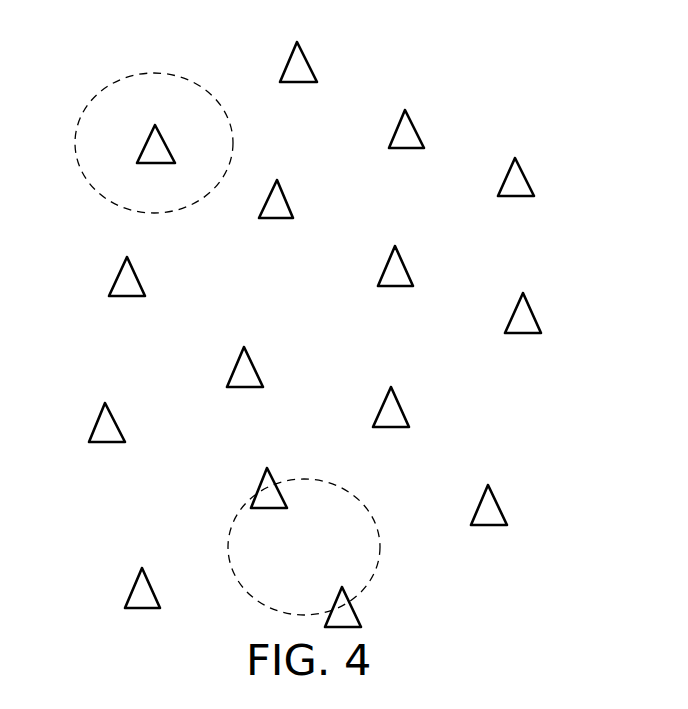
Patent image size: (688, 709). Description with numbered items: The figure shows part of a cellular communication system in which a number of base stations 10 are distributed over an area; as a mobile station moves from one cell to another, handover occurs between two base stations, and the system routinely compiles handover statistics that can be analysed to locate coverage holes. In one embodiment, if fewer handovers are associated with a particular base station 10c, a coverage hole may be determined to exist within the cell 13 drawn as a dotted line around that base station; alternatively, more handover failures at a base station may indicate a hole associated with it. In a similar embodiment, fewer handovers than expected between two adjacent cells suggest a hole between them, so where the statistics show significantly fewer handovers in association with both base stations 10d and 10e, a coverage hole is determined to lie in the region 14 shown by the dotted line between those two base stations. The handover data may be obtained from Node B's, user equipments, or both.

The base station 10 is at (307, 58).
The base station 10c is at (143, 145).
The base station 10d is at (259, 482).
The base station 10e is at (354, 608).
The cell 13 is at (233, 143).
The region 14 is at (381, 547).